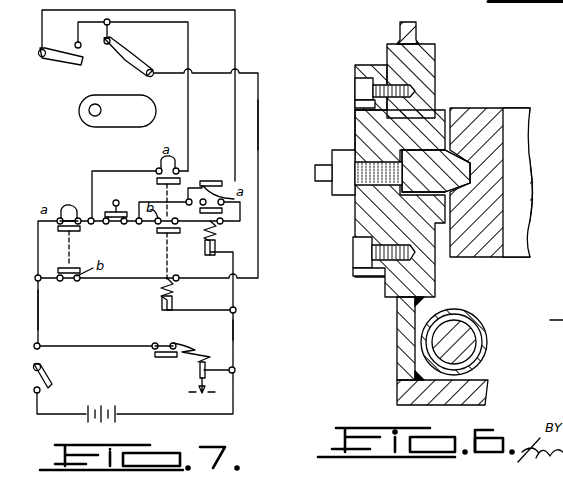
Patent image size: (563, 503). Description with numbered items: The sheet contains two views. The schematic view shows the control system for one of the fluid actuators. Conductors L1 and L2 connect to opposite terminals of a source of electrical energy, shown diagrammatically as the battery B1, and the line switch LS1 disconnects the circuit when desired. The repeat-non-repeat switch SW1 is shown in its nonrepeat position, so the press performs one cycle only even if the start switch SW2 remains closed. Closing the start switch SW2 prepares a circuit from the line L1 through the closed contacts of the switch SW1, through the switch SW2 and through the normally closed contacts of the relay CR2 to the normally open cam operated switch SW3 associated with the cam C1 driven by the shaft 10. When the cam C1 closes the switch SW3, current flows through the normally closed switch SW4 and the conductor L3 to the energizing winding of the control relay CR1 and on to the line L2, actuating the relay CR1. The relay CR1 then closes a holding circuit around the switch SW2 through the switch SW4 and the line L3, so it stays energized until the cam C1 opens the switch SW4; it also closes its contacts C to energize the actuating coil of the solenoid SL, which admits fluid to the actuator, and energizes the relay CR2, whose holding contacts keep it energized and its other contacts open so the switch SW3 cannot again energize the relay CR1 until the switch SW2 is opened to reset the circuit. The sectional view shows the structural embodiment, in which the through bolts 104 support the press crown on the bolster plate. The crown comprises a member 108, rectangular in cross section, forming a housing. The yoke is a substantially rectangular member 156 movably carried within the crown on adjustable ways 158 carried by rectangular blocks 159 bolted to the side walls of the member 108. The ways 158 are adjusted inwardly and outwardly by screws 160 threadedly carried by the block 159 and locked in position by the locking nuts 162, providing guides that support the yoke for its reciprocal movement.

In FIG. 7, the shaft 10 is at (88, 120).
In FIG. 7, the cam C1 is at (121, 117).
In FIG. 7, the repeat-non-repeat switch SW1 is at (80, 246).
In FIG. 7, the start switch SW2 is at (80, 232).
In FIG. 7, the cam operated switch SW3 is at (86, 56).
In FIG. 7, the normally closed switch SW4 is at (142, 62).
In FIG. 7, the control relay CR1 is at (160, 298).
In FIG. 7, the relay CR2 is at (216, 232).
In FIG. 7, the conductor L1 is at (38, 311).
In FIG. 7, the conductor L2 is at (232, 330).
In FIG. 7, the conductor L3 is at (262, 140).
In FIG. 7, the line switch LS1 is at (48, 376).
In FIG. 7, the battery B1 is at (98, 405).
In FIG. 7, the solenoid SL is at (198, 366).
In FIG. 7, the contacts C is at (155, 343).
In FIG. 6, the through bolts 104 is at (478, 335).
In FIG. 6, the member 108 is at (419, 312).
In FIG. 6, the rectangular member 156 is at (490, 108).
In FIG. 6, the adjustable ways 158 is at (438, 145).
In FIG. 6, the rectangular block 159 is at (355, 206).
In FIG. 6, the screw 160 is at (327, 152).
In FIG. 6, the locking nut 162 is at (352, 148).